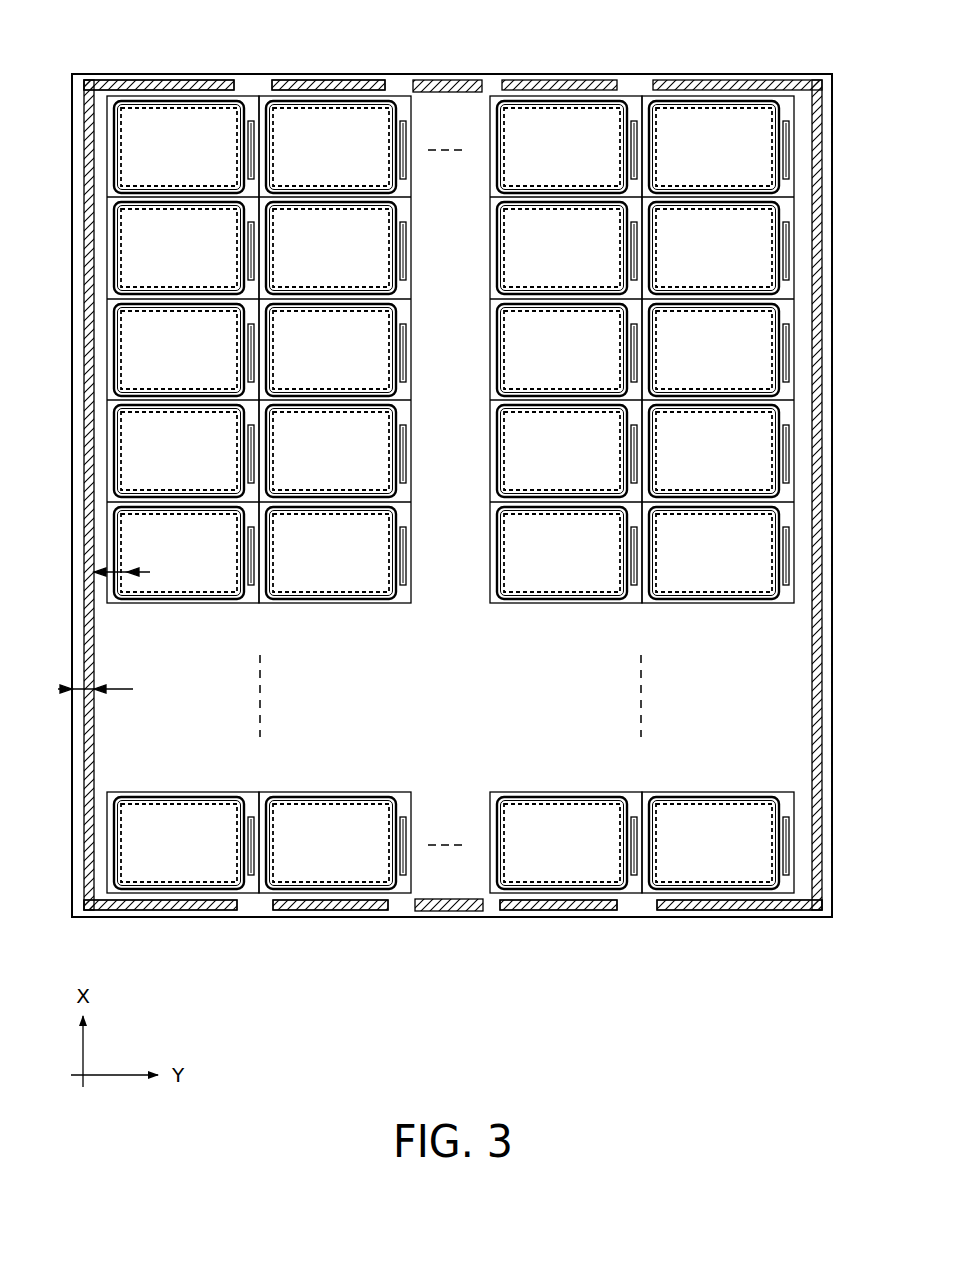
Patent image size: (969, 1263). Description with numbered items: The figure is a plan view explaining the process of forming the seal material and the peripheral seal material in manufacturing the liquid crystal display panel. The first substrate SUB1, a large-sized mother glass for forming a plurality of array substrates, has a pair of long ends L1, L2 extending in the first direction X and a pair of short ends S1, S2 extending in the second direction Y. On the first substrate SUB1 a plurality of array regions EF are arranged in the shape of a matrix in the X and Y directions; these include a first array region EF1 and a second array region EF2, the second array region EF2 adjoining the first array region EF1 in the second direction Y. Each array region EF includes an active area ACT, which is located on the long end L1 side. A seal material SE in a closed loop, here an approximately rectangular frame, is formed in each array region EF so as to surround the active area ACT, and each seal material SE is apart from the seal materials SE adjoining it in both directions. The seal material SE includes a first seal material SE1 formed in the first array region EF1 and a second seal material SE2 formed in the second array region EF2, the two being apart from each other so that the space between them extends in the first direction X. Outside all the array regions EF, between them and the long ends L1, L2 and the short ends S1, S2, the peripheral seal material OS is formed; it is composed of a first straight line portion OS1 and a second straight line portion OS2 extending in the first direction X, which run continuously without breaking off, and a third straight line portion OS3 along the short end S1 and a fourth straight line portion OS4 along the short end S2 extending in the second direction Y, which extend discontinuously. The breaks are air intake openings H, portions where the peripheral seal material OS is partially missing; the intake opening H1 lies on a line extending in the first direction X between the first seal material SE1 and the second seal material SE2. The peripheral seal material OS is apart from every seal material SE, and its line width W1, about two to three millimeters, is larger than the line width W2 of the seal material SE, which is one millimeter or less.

The first substrate SUB1 is at (835, 921).
The long end L1 is at (72, 482).
The long end L2 is at (833, 415).
The peripheral seal material OS is at (442, 502).
The first straight line portion OS1 is at (95, 740).
The second straight line portion OS2 is at (812, 707).
The third straight line portion OS3 is at (746, 80).
The fourth straight line portion OS4 is at (348, 909).
The short end S1 is at (447, 80).
The short end S2 is at (447, 910).
The array region EF is at (213, 903).
The first array region EF1 is at (190, 88).
The second array region EF2 is at (351, 88).
The seal material SE is at (127, 890).
The first seal material SE1 is at (143, 101).
The second seal material SE2 is at (305, 101).
The active area ACT is at (177, 878).
The air intake opening H is at (400, 78).
The intake opening H1 is at (253, 78).
The line width of peripheral seal material W1 is at (113, 689).
The line width of seal material W2 is at (142, 572).